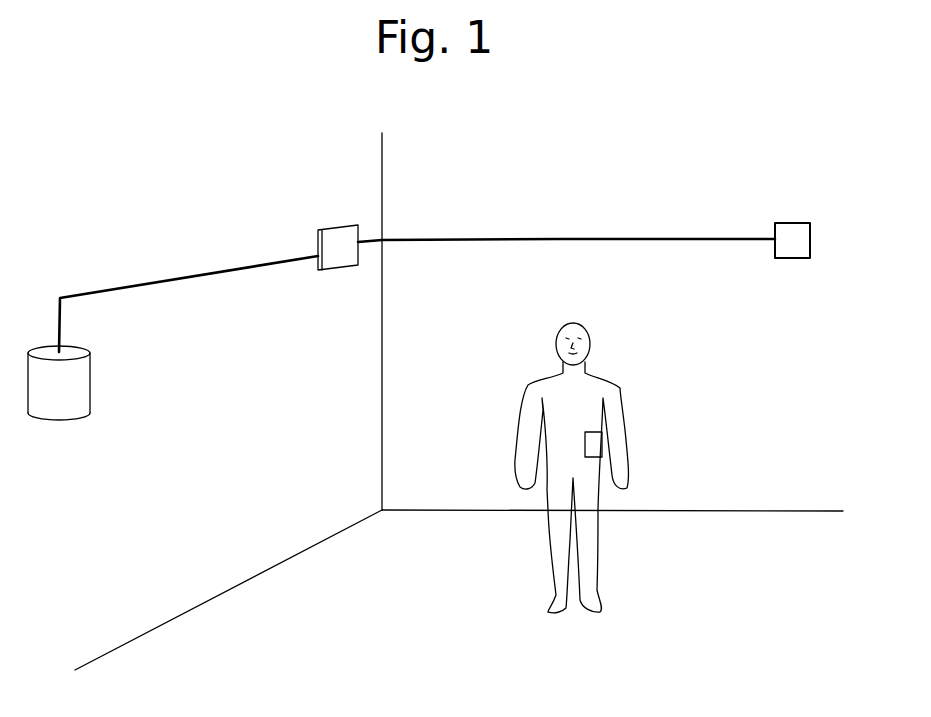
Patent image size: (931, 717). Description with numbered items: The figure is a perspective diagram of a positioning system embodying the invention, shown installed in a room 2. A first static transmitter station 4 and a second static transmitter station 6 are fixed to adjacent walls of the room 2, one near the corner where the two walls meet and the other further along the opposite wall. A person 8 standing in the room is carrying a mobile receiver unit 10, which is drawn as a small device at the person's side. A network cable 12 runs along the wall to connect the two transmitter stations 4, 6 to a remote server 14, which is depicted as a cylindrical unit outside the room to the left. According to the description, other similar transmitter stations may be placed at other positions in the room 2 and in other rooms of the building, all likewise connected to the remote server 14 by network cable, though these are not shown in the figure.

The room 2 is at (341, 638).
The first static transmitter station 4 is at (333, 238).
The second static transmitter station 6 is at (795, 252).
The person 8 is at (541, 376).
The mobile receiver unit 10 is at (596, 447).
The network cable 12 is at (548, 237).
The remote server 14 is at (76, 376).